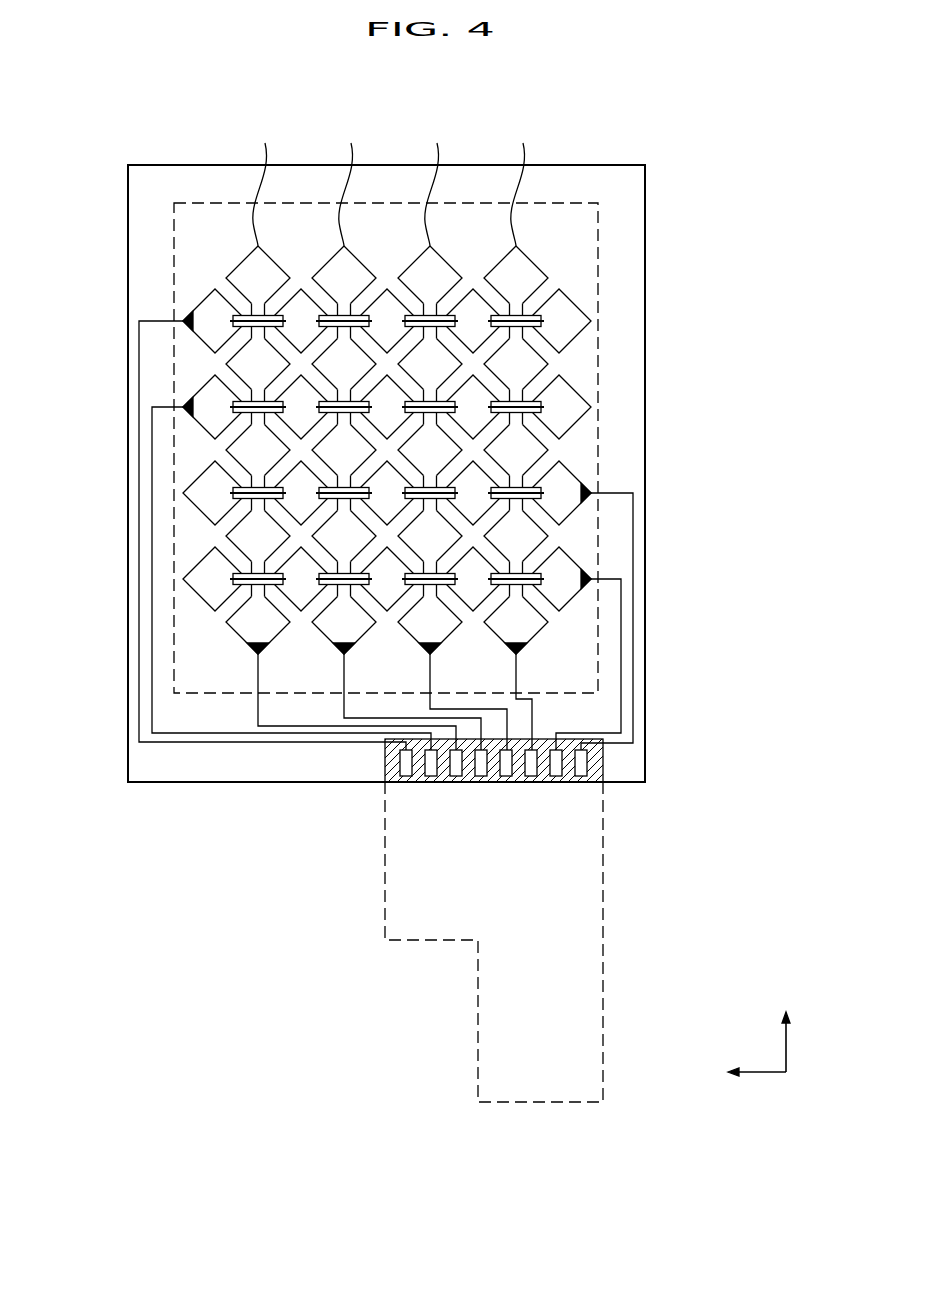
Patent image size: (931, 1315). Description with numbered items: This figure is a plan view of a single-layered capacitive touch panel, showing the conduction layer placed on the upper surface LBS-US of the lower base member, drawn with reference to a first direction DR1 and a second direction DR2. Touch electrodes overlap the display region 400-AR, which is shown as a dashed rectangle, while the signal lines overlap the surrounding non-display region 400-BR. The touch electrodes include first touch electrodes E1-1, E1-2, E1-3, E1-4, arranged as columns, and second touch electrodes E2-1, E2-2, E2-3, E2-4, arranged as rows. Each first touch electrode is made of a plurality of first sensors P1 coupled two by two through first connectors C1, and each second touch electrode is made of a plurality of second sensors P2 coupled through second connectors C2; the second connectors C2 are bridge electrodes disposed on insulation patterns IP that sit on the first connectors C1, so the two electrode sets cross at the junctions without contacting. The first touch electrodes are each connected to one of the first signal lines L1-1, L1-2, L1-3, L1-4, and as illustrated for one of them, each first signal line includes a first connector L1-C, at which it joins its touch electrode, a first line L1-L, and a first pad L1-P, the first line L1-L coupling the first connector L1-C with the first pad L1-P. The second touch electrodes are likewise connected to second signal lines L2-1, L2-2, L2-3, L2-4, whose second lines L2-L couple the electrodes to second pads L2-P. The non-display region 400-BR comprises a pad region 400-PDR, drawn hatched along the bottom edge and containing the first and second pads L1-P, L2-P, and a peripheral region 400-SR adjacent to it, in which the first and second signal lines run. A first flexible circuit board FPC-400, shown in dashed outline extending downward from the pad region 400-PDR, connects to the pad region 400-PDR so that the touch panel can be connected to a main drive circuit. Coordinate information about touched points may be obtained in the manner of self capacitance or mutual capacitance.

The first touch electrode E1-1 is at (235, 397).
The first touch electrode E1-2 is at (344, 388).
The first touch electrode E1-3 is at (430, 388).
The first touch electrode E1-4 is at (588, 388).
The second touch electrode E2-1 is at (198, 307).
The second touch electrode E2-2 is at (198, 393).
The second touch electrode E2-3 is at (198, 480).
The second touch electrode E2-4 is at (198, 566).
The non-display region 400-BR is at (629, 199).
The display region 400-AR is at (598, 245).
The upper surface of the lower base member LBS-US is at (738, 176).
The first sensor P1 is at (588, 275).
The first connector C1 is at (601, 301).
The insulation pattern IP is at (589, 328).
The second sensor P2 is at (609, 325).
The second connector C2 is at (601, 356).
The first connector of first signal line L1-C is at (224, 657).
The first signal line L1-1 is at (262, 681).
The first signal line L1-2 is at (347, 671).
The first signal line L1-3 is at (433, 671).
The first signal line L1-4 is at (519, 671).
The first line L1-L is at (258, 705).
The second line L2-L is at (138, 690).
The second signal line L2-1 is at (160, 742).
The second signal line L2-2 is at (213, 733).
The second signal line L2-3 is at (624, 746).
The second signal line L2-4 is at (618, 733).
The second pad L2-P is at (406, 777).
The first pad L1-P is at (456, 777).
The peripheral region 400-SR is at (263, 764).
The pad region 400-PDR is at (385, 758).
The first flexible circuit board FPC-400 is at (603, 921).
The first direction DR1 is at (739, 1071).
The second direction DR2 is at (787, 1032).